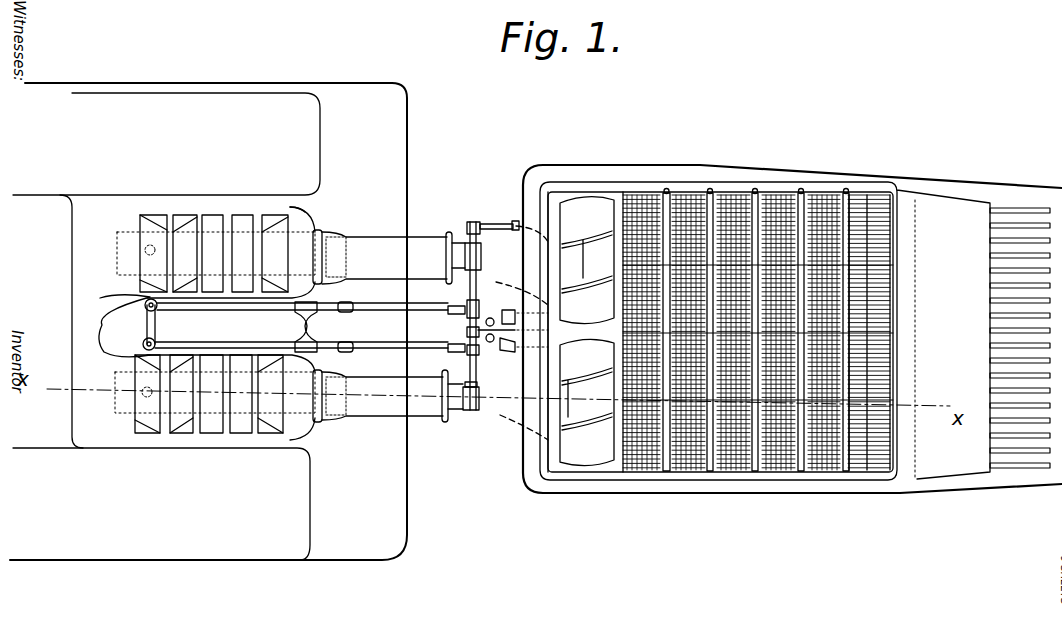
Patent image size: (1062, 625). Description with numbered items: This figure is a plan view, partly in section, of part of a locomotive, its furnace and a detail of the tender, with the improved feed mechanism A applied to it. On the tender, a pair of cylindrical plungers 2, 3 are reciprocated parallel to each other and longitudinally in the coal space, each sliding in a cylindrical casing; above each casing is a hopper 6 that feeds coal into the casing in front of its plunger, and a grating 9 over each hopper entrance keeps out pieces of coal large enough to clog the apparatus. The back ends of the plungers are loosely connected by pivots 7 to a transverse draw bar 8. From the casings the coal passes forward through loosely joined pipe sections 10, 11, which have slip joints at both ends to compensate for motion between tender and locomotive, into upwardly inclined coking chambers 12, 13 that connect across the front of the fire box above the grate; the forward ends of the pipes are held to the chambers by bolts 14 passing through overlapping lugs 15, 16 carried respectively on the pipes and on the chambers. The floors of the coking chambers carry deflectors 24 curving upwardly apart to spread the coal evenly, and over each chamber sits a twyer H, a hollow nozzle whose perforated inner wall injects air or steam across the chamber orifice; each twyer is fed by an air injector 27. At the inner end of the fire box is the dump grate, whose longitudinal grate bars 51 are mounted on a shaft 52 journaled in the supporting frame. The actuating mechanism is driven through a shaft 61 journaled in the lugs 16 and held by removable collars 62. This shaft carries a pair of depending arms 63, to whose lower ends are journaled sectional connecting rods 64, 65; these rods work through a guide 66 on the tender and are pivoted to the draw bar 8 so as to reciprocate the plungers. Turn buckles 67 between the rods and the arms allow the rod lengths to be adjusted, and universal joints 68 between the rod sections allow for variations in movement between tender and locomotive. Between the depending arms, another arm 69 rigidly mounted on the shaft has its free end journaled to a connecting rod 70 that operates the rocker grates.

The plunger 2 is at (222, 400).
The plunger 3 is at (235, 245).
The hopper 6 is at (182, 432).
The pivot 7 is at (135, 385).
The draw bar 8 is at (152, 328).
The grating 9 is at (225, 432).
The pipe section 10 is at (385, 376).
The pipe section 11 is at (378, 236).
The coking chamber 12 is at (490, 425).
The coking chamber 13 is at (491, 240).
The bolt 14 is at (457, 415).
The lug 15 is at (437, 398).
The lug 16 is at (488, 334).
The deflector 24 is at (587, 322).
The air injector 27 is at (516, 352).
The grate bar 51 is at (890, 215).
The shaft 52 is at (870, 195).
The shaft 61 is at (473, 225).
The collar 62 is at (468, 476).
The depending arm 63 is at (513, 340).
The connecting rod 64 is at (387, 330).
The connecting rod 65 is at (372, 325).
The guide 66 is at (298, 325).
The turn buckle 67 is at (455, 305).
The universal joint 68 is at (360, 305).
The arm 69 is at (468, 330).
The connecting rod 70 is at (500, 308).
The feed mechanism A is at (270, 245).
The twyer H is at (585, 332).